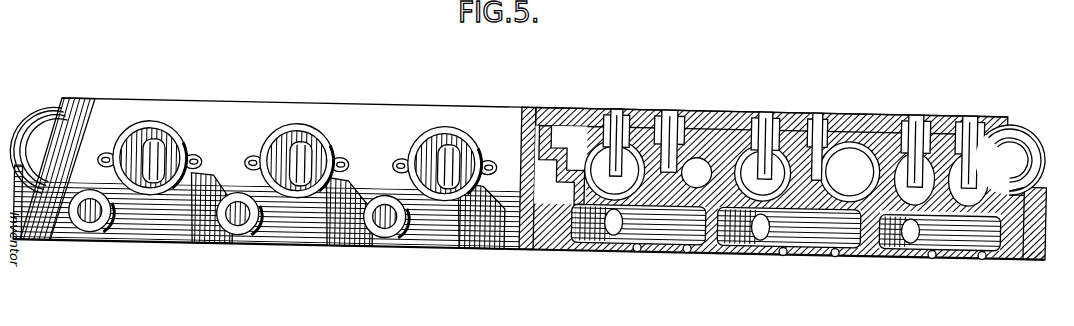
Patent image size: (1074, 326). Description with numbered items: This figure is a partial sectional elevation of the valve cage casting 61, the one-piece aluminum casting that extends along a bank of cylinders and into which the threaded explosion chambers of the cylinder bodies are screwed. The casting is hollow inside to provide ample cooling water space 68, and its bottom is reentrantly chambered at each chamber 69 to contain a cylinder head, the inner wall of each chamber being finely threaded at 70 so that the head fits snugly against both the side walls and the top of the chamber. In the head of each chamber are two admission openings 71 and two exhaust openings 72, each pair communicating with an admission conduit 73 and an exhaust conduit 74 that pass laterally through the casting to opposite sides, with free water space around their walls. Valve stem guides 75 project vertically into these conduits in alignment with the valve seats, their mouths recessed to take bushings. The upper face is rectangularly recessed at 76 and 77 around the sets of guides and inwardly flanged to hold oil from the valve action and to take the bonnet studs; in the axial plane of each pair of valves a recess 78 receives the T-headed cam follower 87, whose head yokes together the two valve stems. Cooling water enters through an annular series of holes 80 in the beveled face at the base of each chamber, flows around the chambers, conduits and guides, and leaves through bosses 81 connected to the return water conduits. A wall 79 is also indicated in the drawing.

The valve cage casting 61 is at (1044, 157).
The cooling water space 68 is at (583, 145).
The chamber 69 is at (663, 225).
The threaded inner wall 70 is at (805, 225).
The admission opening 71 is at (1008, 139).
The exhaust opening 72 is at (973, 120).
The admission conduit 73 is at (898, 166).
The exhaust conduit 74 is at (1014, 119).
The valve stem guide 75 is at (924, 141).
The rectangular recess 76 is at (790, 112).
The rectangular recess 77 is at (978, 165).
The recess 78 is at (762, 103).
The wall between cylinders 79 is at (720, 192).
The hole 80 is at (640, 235).
The boss 81 is at (86, 228).
The T-headed cam follower 87 is at (818, 148).